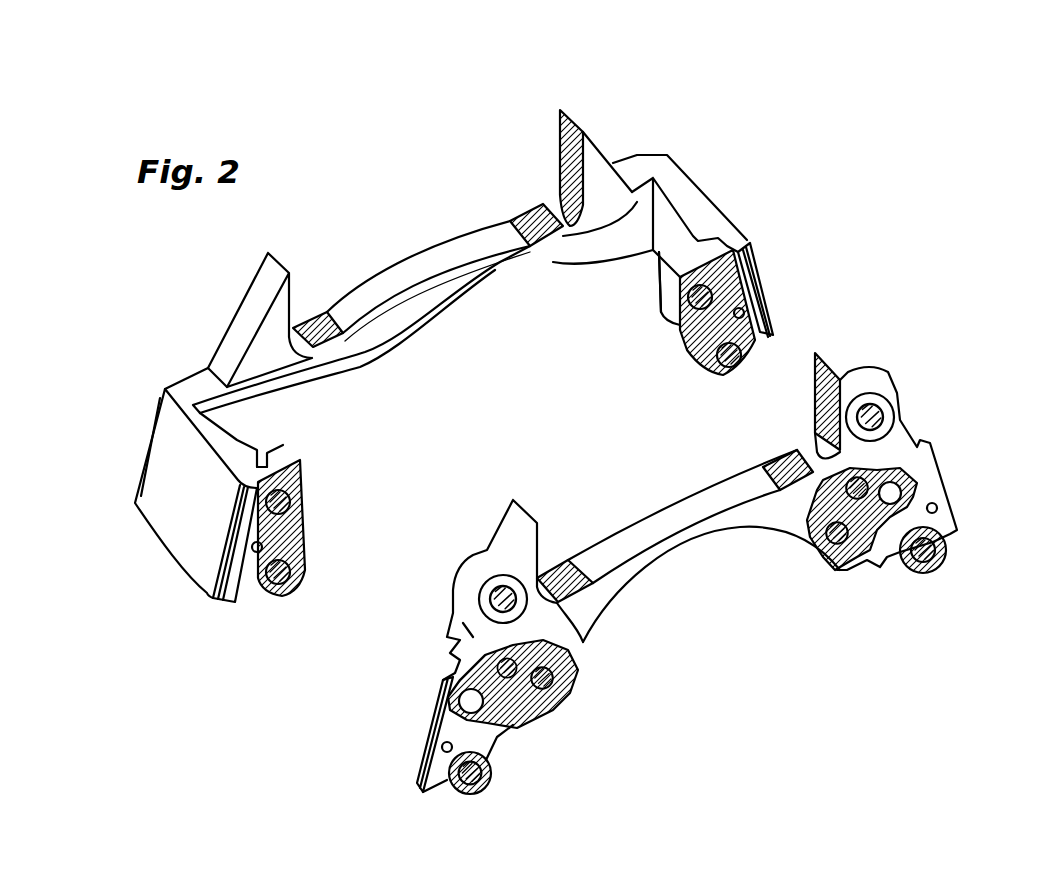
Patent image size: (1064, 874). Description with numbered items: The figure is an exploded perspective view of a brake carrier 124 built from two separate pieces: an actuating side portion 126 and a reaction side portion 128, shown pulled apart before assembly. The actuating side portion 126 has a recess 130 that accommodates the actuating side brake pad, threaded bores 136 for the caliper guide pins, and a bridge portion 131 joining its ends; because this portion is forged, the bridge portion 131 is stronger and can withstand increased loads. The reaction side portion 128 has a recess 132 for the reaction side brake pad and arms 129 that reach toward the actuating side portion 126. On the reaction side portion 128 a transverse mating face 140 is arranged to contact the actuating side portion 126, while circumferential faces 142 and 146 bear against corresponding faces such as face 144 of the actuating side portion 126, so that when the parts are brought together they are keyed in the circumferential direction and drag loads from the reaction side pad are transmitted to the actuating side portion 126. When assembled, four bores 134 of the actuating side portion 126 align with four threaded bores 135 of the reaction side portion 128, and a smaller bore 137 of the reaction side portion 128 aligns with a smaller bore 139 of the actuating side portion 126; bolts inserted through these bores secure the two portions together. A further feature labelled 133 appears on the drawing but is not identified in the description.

The carrier 124 is at (826, 331).
The actuating side portion 126 is at (587, 633).
The reaction side portion 128 is at (631, 154).
The arms 129 is at (187, 500).
The recess 130 is at (828, 402).
The bridge portion 131 is at (683, 537).
The recess 132 is at (573, 142).
The upper rail 133 is at (398, 277).
The bores 134 is at (500, 728).
The threaded bores 135 is at (291, 507).
The threaded bores 136 is at (495, 598).
The smaller bore 137 is at (441, 748).
The smaller bore 139 is at (262, 546).
The transverse mating face 140 is at (288, 470).
The circumferential face 142 is at (237, 595).
The corresponding face 144 is at (437, 727).
The circumferential face 146 is at (287, 440).